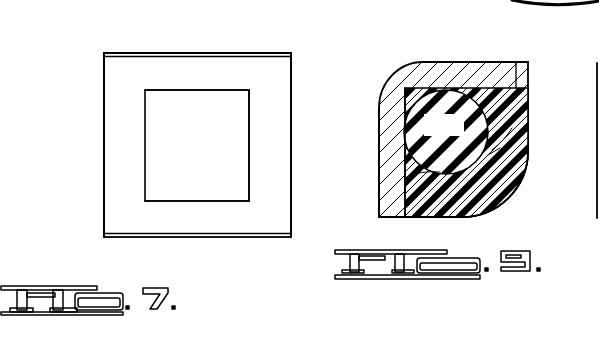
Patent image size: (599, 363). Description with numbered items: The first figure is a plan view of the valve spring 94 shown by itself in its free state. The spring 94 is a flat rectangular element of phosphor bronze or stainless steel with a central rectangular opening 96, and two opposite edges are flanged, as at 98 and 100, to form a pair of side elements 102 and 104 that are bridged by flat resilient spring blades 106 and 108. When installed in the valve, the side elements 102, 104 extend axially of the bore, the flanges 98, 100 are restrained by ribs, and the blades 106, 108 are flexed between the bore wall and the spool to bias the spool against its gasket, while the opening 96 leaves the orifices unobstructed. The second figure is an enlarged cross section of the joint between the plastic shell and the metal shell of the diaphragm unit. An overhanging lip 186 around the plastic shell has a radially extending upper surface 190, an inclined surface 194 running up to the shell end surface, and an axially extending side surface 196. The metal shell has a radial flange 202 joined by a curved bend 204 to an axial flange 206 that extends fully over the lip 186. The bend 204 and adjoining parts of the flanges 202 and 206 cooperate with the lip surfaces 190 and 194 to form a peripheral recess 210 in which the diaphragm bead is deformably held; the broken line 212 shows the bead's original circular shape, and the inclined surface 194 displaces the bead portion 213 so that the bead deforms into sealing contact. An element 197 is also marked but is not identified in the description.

In FIG. 7, the spring 94 is at (297, 70).
In FIG. 7, the central rectangular opening 96 is at (206, 92).
In FIG. 7, the flange 98 is at (207, 40).
In FIG. 7, the flange 100 is at (195, 241).
In FIG. 7, the side element 102 is at (188, 78).
In FIG. 7, the side element 104 is at (189, 208).
In FIG. 7, the spring blade 106 is at (108, 130).
In FIG. 7, the spring blade 108 is at (272, 131).
In FIG. 9, the lip 186 is at (480, 196).
In FIG. 9, the upper surface 190 is at (405, 178).
In FIG. 9, the inclined surface 194 is at (492, 150).
In FIG. 9, the side surface 196 is at (385, 197).
In FIG. 9, the wall step 197 is at (516, 63).
In FIG. 9, the radial flange 202 is at (497, 62).
In FIG. 9, the curved bend 204 is at (397, 82).
In FIG. 9, the axial flange 206 is at (380, 212).
In FIG. 9, the peripheral recess 210 is at (405, 165).
In FIG. 9, the broken line 212 is at (435, 141).
In FIG. 9, the displaced portion of bead 213 is at (489, 152).